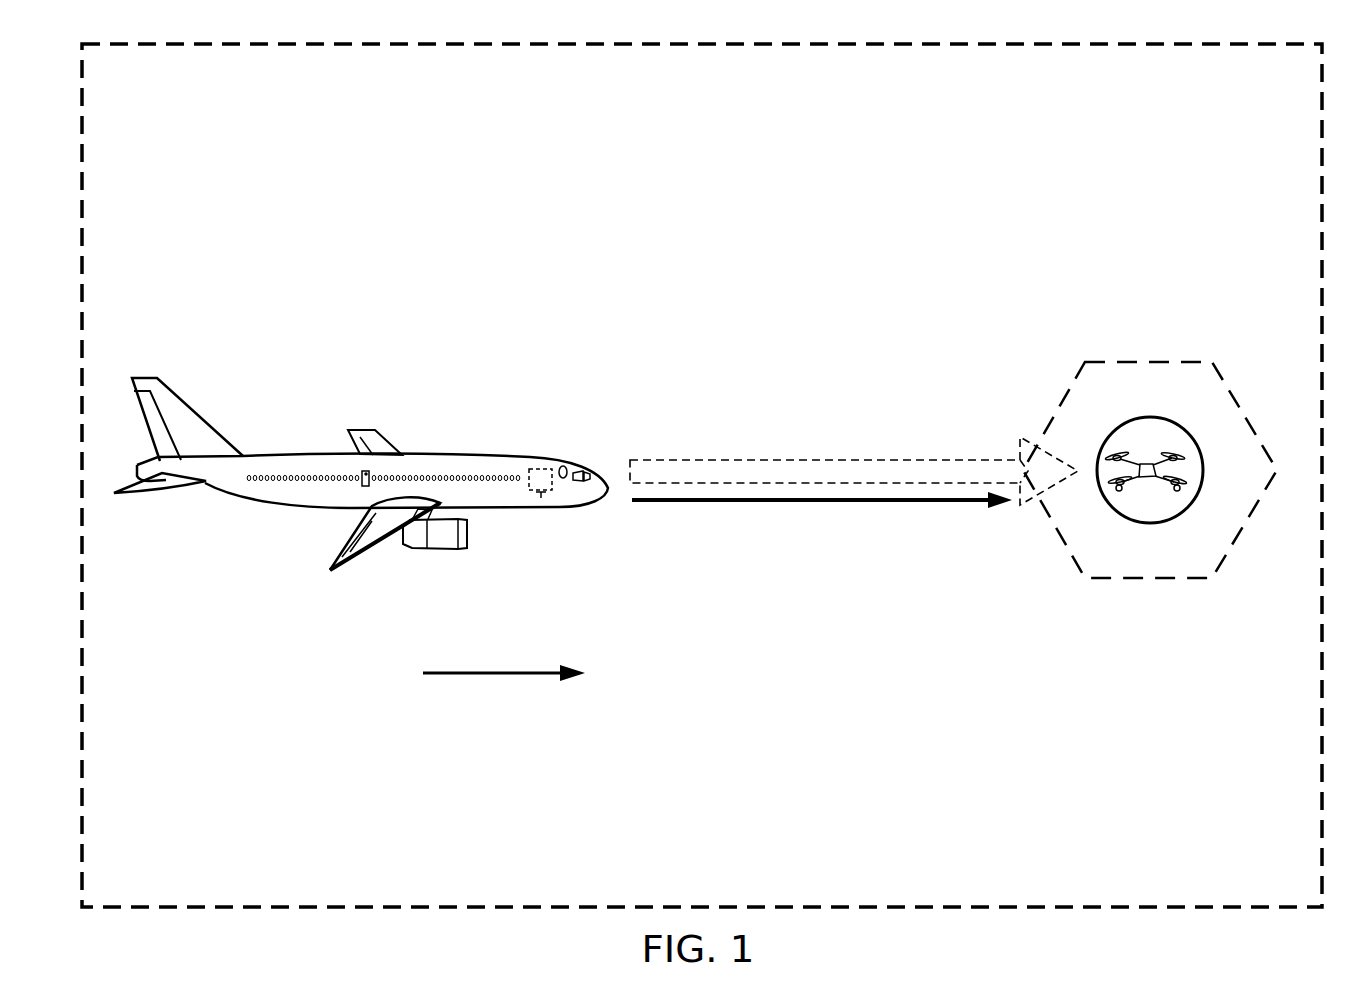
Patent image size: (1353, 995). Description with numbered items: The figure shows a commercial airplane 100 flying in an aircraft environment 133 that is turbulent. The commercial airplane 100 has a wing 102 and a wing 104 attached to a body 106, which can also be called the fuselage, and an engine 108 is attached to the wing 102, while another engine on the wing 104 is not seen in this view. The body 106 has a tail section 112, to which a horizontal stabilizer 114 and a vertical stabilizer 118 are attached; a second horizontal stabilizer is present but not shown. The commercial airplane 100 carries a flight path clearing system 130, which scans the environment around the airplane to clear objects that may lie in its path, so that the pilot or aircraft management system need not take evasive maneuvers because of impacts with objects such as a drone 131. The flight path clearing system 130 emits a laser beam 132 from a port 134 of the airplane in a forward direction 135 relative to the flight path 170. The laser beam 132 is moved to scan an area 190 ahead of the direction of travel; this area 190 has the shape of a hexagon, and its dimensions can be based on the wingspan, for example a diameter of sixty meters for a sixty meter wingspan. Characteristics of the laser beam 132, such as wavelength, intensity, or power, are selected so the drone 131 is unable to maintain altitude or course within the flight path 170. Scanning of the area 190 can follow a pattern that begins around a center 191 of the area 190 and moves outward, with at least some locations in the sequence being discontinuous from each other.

The commercial airplane 100 is at (284, 340).
The wing 102 is at (348, 562).
The wing 104 is at (360, 430).
The body 106 is at (282, 514).
The engine 108 is at (448, 540).
The tail section 112 is at (219, 491).
The horizontal stabilizer 114 is at (147, 487).
The vertical stabilizer 118 is at (148, 378).
The flight path clearing system 130 is at (541, 500).
The drone 131 is at (1150, 463).
The laser beam 132 is at (852, 460).
The aircraft environment 133 is at (671, 245).
The port 134 is at (565, 464).
The forward direction 135 is at (502, 676).
The flight path 170 is at (818, 503).
The area 190 is at (1152, 352).
The center 191 is at (1163, 518).